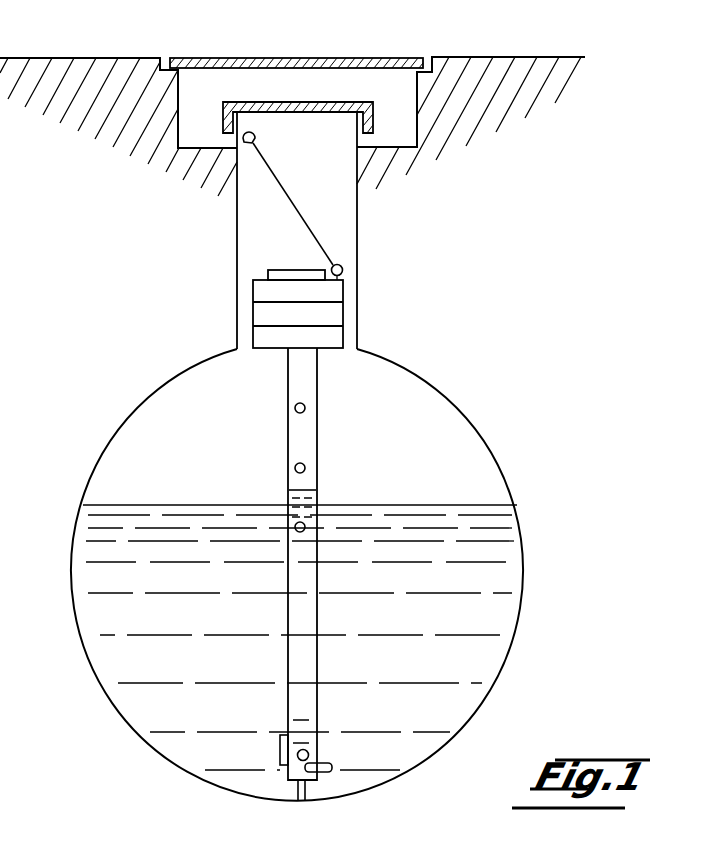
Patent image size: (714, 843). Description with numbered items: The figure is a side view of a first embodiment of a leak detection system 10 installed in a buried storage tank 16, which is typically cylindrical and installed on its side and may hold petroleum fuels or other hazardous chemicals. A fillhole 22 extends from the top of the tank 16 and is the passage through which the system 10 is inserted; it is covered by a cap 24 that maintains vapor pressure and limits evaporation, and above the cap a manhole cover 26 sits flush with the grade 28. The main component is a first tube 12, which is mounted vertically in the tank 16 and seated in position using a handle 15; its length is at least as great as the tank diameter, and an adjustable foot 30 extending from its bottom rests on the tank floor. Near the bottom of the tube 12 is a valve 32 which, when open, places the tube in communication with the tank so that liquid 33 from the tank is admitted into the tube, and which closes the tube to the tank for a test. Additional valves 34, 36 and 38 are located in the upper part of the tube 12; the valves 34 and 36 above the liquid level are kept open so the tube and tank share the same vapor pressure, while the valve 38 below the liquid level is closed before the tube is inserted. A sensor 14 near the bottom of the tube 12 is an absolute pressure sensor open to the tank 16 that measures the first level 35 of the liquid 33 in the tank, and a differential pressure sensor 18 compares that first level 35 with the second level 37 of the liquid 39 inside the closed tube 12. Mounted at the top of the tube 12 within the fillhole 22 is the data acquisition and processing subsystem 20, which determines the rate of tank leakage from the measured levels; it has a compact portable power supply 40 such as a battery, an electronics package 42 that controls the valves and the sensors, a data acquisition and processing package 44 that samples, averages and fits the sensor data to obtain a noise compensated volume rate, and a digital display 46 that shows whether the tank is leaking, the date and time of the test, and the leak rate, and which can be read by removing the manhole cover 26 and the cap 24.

The leak detection system 10 is at (216, 445).
The first tube 12 is at (287, 425).
The sensor 14 is at (280, 742).
The handle 15 is at (257, 138).
The tank 16 is at (144, 402).
The sensor 18 is at (333, 770).
The data acquisition and processing subsystem 20 is at (329, 292).
The fillhole 22 is at (357, 205).
The cap 24 is at (290, 101).
The manhole cover 26 is at (367, 57).
The grade 28 is at (492, 57).
The adjustable foot 30 is at (295, 787).
The valve 32 is at (309, 753).
The liquid 33 is at (207, 627).
The valve 34 is at (305, 406).
The first level 35 is at (178, 505).
The valve 36 is at (305, 466).
The second level 37 is at (288, 478).
The valve 38 is at (305, 524).
The liquid 39 is at (312, 665).
The compact portable power supply 40 is at (343, 337).
The electronics package 42 is at (343, 313).
The data acquisition and processing package 44 is at (343, 291).
The digital display 46 is at (306, 270).